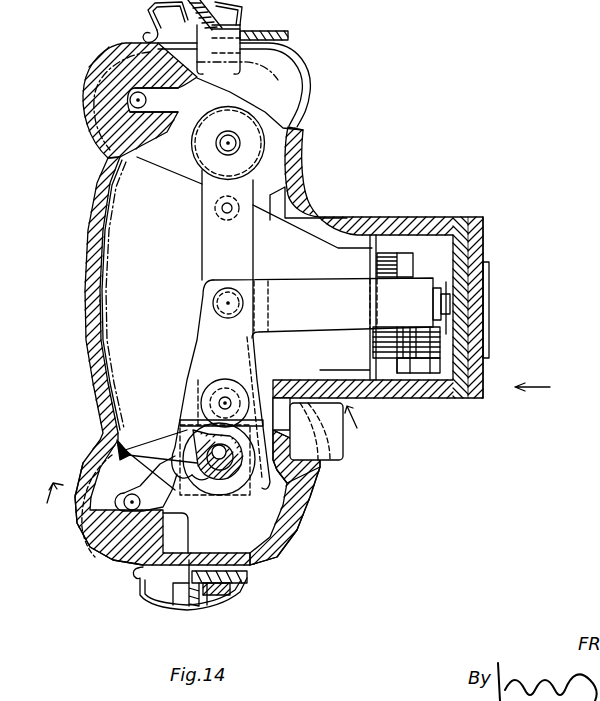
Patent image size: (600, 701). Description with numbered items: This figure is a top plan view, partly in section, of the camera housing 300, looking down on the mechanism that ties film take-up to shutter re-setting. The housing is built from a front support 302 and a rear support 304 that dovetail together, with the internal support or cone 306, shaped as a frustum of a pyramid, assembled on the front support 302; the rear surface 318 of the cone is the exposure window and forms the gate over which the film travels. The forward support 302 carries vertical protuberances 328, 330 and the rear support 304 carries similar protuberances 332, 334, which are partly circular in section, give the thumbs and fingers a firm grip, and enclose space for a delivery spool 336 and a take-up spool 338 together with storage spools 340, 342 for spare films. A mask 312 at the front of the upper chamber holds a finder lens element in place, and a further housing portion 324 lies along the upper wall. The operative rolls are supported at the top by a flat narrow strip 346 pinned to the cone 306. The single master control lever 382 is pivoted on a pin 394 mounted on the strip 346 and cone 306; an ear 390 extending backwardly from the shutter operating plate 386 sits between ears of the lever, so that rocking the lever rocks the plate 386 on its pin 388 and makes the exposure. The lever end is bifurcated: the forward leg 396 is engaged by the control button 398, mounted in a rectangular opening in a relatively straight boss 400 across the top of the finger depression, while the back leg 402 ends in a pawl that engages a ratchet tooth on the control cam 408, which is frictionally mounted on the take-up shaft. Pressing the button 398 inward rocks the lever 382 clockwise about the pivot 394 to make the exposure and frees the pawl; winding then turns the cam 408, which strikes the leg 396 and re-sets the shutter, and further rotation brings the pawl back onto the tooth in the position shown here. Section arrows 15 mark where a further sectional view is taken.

The section line 15 is at (204, 470).
The camera housing 300 is at (551, 390).
The front support 302 is at (453, 392).
The rear support 304 is at (95, 407).
The internal support or cone 306 is at (172, 336).
The mask 312 is at (484, 232).
The rear surface of cone (exposure window) 318 is at (105, 242).
The mounting bracket 324 is at (377, 245).
The vertical protuberance 328 is at (310, 90).
The vertical protuberance 330 is at (300, 530).
The protuberance 332 is at (90, 86).
The protuberance 334 is at (108, 556).
The delivery spool 336 is at (245, 154).
The take-up spool 338 is at (230, 503).
The storage spool 340 is at (160, 104).
The storage spool 342 is at (168, 508).
The flat narrow plate or strip 346 is at (245, 265).
The master control lever 382 is at (345, 315).
The shutter operating plate 386 is at (443, 287).
The pin 388 is at (450, 313).
The ear 390 is at (445, 300).
The pin (pivot) 394 is at (243, 300).
The forward leg 396 is at (268, 486).
The control button 398 is at (338, 447).
The boss 400 is at (320, 470).
The back leg 402 is at (187, 428).
The control cam 408 is at (193, 440).